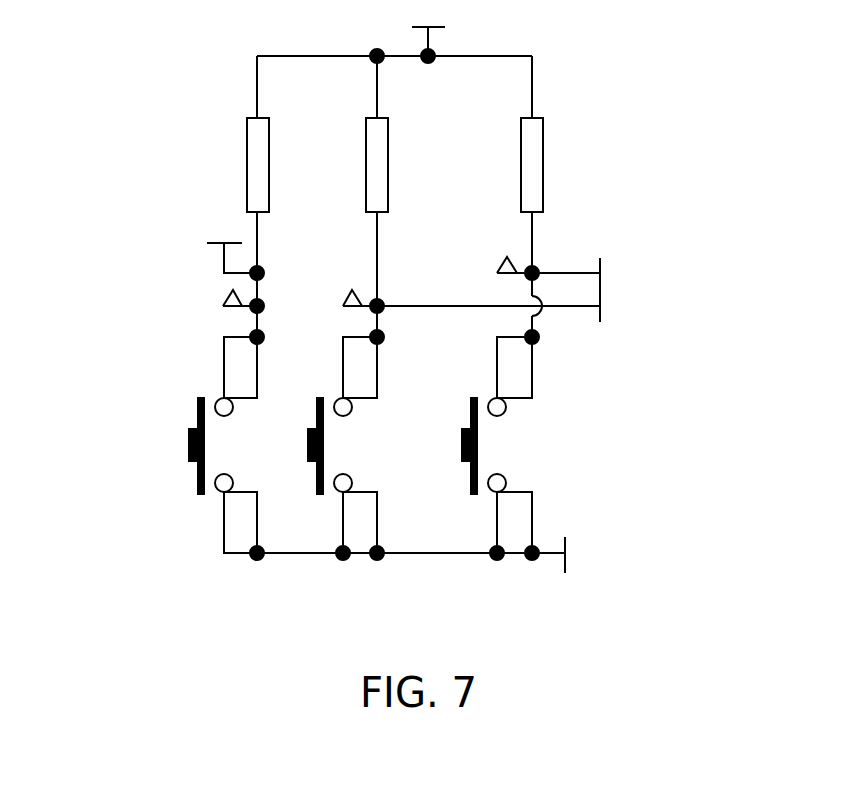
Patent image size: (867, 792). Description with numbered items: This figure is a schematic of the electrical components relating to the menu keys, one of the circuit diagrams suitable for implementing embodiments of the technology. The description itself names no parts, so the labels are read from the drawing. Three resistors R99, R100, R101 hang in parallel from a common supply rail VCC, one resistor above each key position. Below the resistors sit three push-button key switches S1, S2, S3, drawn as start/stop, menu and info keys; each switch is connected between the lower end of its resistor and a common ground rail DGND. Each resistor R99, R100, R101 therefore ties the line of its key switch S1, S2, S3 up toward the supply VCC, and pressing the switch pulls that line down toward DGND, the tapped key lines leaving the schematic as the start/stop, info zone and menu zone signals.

The pull-up resistor 10K for start/stop key R99 is at (280, 165).
The pull-up resistor 10K for menu key R100 is at (404, 165).
The pull-up resistor 10K for info key R101 is at (558, 165).
The START_STOP push-button switch S1 is at (153, 445).
The MENU push-button switch S2 is at (356, 445).
The INFO push-button switch S3 is at (505, 445).
The supply voltage net VCC is at (410, 31).
The digital ground net DGND is at (428, 555).